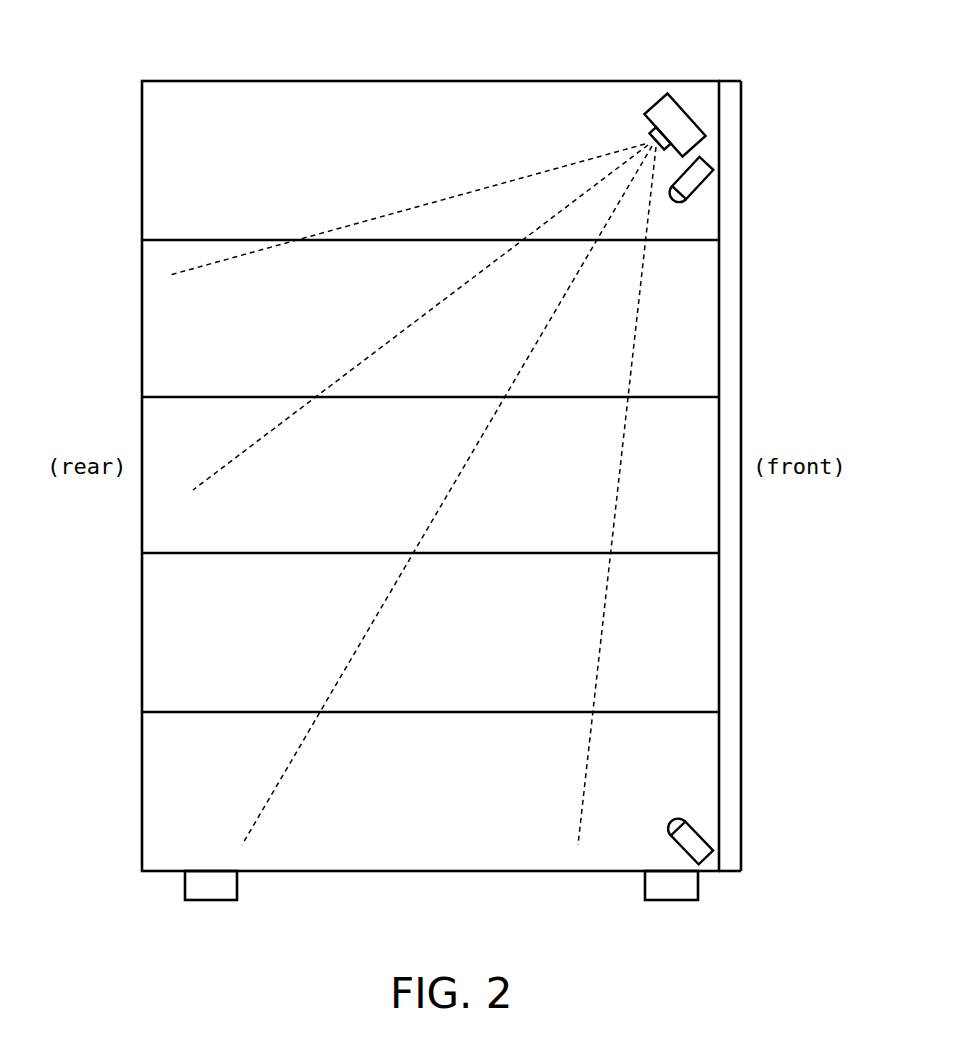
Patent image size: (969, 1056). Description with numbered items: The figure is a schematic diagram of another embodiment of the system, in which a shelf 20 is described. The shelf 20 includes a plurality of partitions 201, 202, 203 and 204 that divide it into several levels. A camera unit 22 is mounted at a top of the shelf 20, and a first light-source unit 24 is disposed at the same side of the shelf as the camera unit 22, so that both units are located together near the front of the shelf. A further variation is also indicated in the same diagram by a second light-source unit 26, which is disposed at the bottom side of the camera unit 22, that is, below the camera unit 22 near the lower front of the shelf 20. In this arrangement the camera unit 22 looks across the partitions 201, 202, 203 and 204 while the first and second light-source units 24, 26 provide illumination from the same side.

The shelf 20 is at (228, 81).
The partition 201 is at (683, 238).
The partition 202 is at (683, 396).
The partition 203 is at (683, 552).
The partition 204 is at (683, 711).
The camera unit 22 is at (677, 123).
The first light-source unit 24 is at (697, 170).
The second light-source unit 26 is at (693, 843).